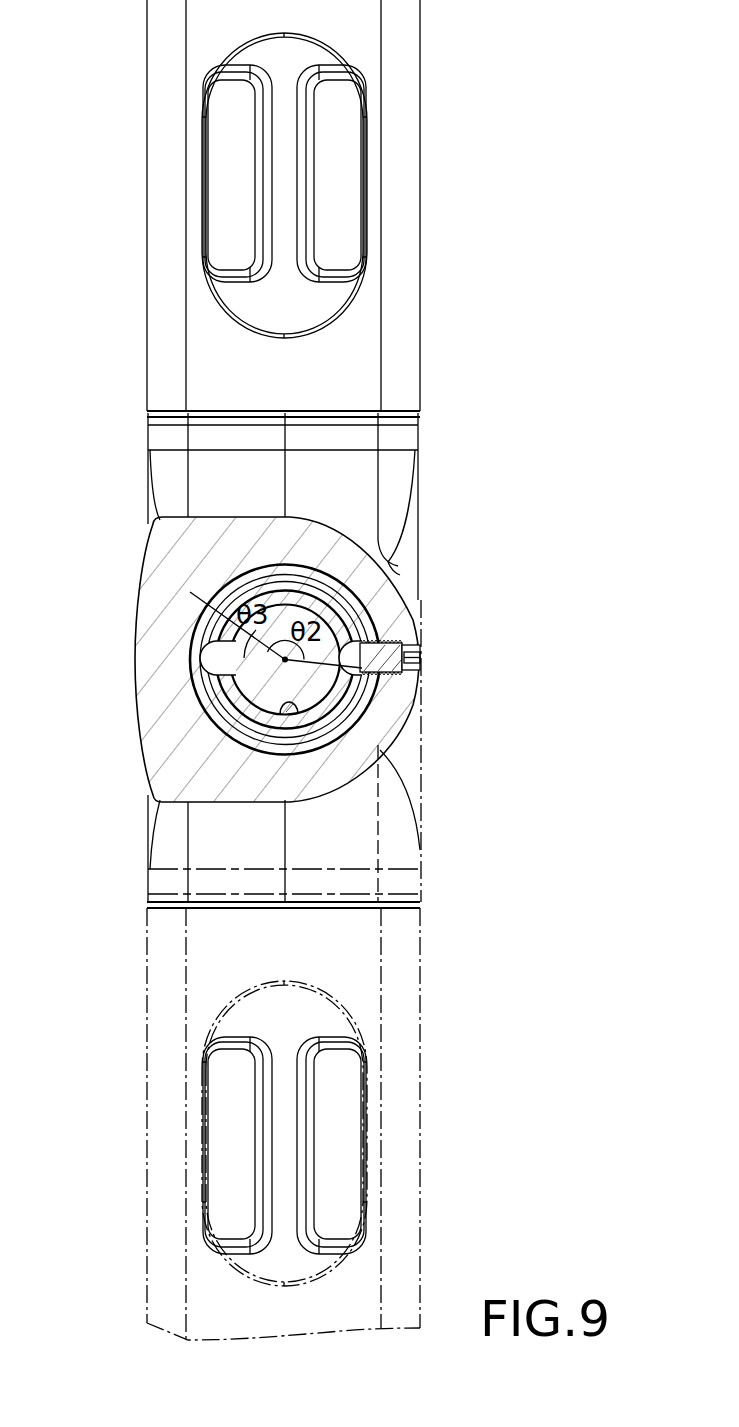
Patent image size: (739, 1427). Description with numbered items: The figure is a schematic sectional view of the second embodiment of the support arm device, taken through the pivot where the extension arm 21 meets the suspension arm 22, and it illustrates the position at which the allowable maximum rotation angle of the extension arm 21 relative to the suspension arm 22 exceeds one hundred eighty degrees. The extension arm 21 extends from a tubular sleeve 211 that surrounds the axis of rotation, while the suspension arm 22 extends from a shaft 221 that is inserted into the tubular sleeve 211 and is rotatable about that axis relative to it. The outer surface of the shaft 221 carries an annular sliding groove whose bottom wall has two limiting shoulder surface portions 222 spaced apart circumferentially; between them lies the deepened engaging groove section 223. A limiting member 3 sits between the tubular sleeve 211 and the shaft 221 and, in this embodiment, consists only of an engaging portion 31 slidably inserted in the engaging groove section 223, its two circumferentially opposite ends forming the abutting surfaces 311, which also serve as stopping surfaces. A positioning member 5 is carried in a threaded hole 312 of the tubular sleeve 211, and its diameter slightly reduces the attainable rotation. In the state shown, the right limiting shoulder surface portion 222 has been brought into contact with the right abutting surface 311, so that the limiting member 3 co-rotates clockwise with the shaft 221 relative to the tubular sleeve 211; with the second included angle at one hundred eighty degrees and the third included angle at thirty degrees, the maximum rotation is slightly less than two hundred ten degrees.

The suspension arm 22 is at (147, 205).
The extension arm 21 is at (287, 518).
The tubular sleeve 211 is at (268, 532).
The shaft 221 is at (318, 603).
The limiting shoulder surface portions 222 is at (240, 633).
The limiting member 3 is at (195, 702).
The engaging portion 31 is at (333, 710).
The abutting surfaces 311 is at (285, 660).
The threaded hole 312 is at (375, 687).
The positioning member 5 is at (436, 652).
The engaging groove section 223 is at (289, 712).